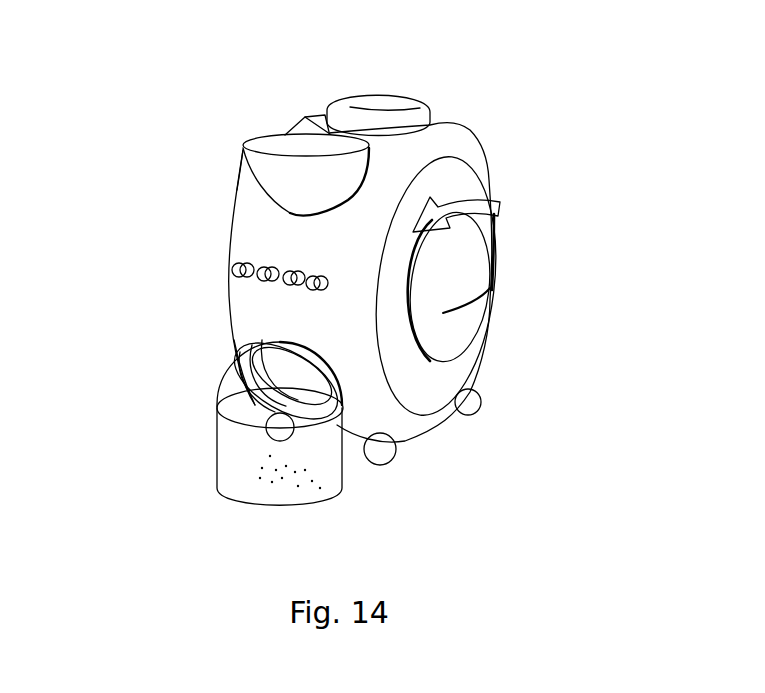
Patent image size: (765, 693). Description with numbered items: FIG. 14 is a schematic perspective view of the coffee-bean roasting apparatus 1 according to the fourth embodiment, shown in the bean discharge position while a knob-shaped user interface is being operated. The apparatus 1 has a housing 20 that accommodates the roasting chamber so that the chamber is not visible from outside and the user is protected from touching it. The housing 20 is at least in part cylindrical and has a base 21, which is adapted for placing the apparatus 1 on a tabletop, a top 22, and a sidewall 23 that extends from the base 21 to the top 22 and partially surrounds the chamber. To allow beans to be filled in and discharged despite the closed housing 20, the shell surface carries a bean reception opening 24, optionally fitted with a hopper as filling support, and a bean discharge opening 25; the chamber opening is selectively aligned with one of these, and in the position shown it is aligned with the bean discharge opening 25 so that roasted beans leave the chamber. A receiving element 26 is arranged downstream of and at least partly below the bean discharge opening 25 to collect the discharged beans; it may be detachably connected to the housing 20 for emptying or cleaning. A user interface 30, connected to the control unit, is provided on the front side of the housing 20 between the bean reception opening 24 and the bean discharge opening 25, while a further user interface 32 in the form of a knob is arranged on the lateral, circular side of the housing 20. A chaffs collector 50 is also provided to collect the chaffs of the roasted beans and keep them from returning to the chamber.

The apparatus 1 is at (204, 157).
The housing 20 is at (474, 112).
The base 21 is at (395, 425).
The top 22 is at (305, 120).
The sidewall 23 is at (423, 373).
The bean reception opening 24 is at (240, 182).
The bean discharge opening 25 is at (226, 333).
The receiving element 26 is at (240, 455).
The user interface 30 is at (196, 268).
The user interface 32 is at (498, 214).
The chaffs collector 50 is at (384, 84).